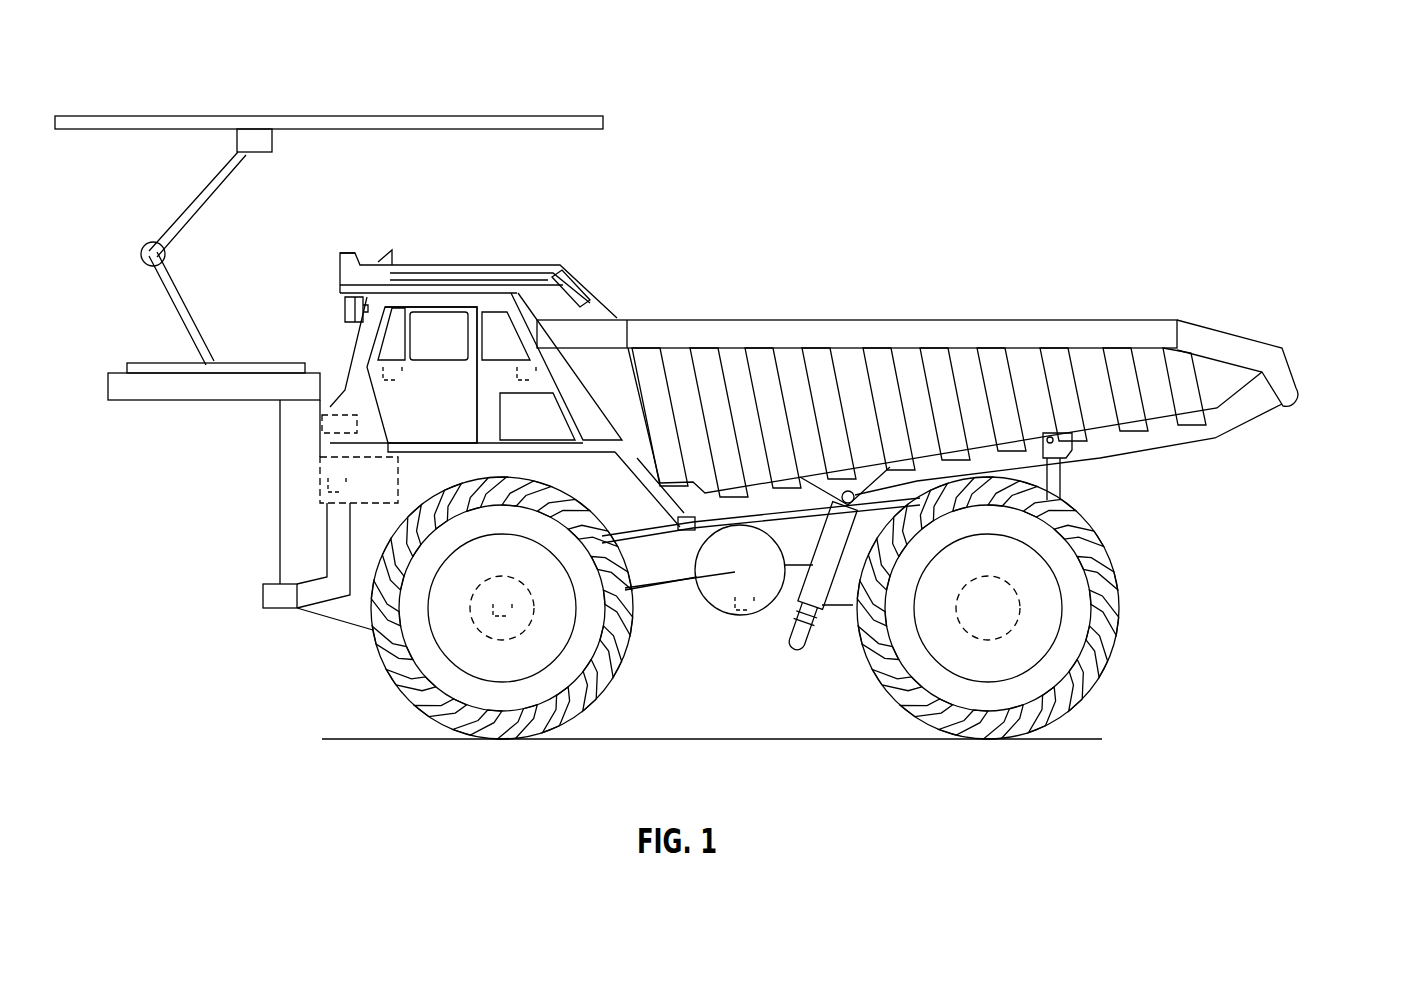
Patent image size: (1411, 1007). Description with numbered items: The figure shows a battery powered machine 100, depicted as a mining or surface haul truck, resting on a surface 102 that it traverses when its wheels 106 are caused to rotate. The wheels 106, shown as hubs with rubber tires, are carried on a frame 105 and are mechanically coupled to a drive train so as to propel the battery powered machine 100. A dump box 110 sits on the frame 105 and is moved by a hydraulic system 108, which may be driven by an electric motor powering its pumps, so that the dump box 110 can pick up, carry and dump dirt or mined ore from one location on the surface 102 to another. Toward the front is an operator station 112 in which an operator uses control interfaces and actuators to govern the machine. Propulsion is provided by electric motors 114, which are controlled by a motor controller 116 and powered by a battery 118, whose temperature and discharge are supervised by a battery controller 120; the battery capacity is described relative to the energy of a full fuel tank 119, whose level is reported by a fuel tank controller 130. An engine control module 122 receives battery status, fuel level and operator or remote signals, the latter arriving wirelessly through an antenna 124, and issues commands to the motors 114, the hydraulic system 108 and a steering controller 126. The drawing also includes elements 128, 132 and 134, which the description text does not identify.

The battery powered machine 100 is at (1292, 176).
The surface 102 is at (396, 742).
The frame 105 is at (653, 573).
The wheels 106 is at (395, 673).
The hydraulic system 108 is at (818, 600).
The dump box 110 is at (995, 322).
The operator station 112 is at (449, 390).
The motors 114 is at (500, 610).
The motor controller 116 is at (512, 612).
The battery 118 is at (322, 462).
The fuel tank 119 is at (728, 607).
The battery controller 120 is at (330, 488).
The engine control module (ECM) 122 is at (325, 422).
The antenna 124 is at (390, 252).
The steering controller 126 is at (532, 367).
The cab sensor 128 is at (396, 367).
The fuel tank controller 130 is at (750, 615).
The charging arm 132 is at (130, 302).
The overhead charging rail 134 is at (331, 131).